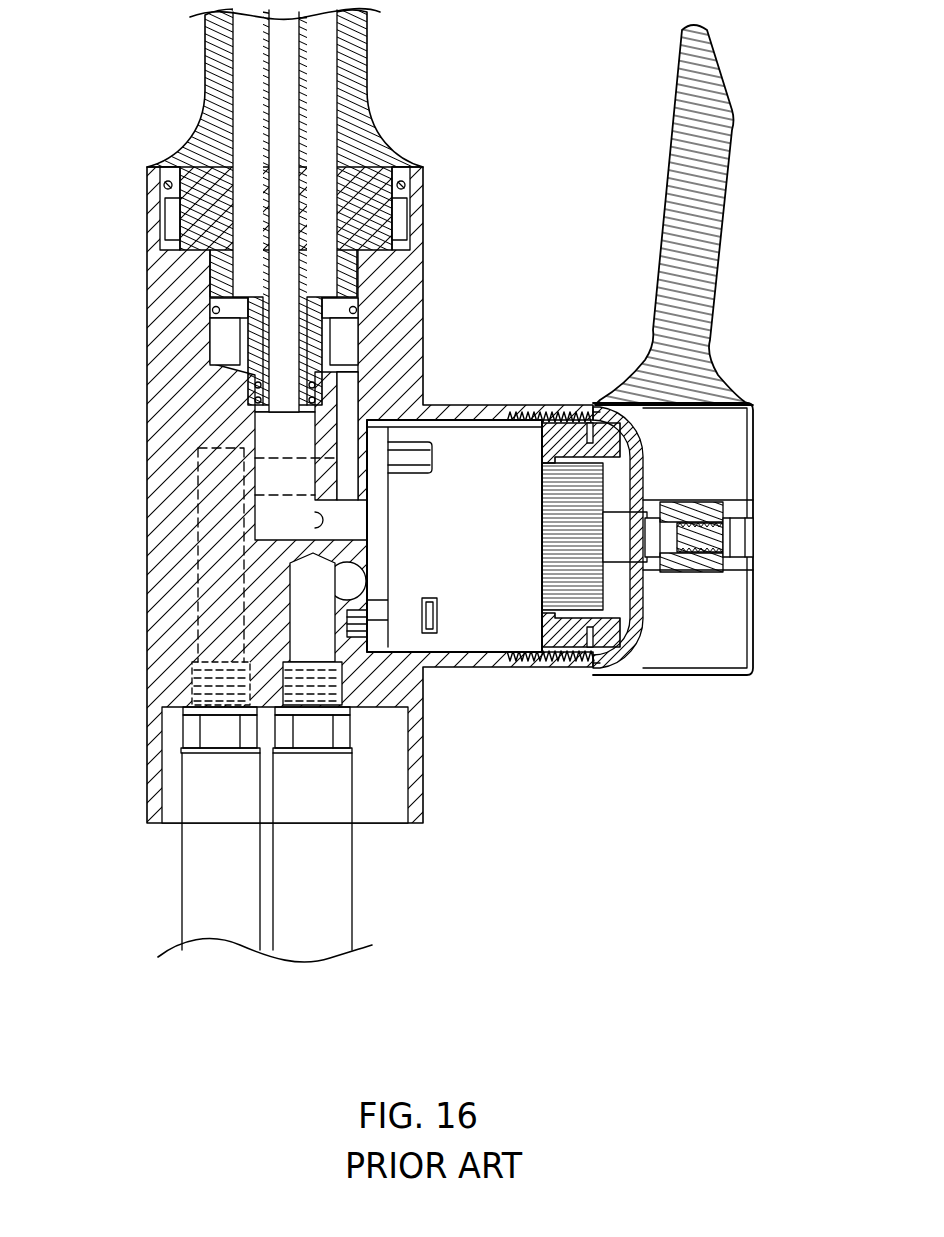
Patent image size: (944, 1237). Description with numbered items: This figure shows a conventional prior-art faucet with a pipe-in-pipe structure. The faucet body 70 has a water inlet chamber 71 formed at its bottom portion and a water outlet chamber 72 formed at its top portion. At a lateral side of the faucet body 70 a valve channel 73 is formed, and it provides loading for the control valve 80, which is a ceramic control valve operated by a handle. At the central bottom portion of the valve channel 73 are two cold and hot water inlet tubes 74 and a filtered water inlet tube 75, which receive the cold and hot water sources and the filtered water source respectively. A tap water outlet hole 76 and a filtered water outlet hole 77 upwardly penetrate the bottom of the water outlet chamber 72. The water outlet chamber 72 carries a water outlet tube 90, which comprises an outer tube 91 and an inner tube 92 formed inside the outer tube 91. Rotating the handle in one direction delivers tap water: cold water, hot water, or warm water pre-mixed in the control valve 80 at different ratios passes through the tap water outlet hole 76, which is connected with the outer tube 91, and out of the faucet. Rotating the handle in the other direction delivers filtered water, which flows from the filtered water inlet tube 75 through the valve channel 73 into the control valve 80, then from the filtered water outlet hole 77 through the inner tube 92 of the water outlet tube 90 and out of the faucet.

The faucet body 70 is at (432, 816).
The water inlet chamber 71 is at (173, 783).
The water outlet chamber 72 is at (213, 340).
The valve channel 73 is at (482, 420).
The cold and hot water inlet tubes 74 is at (205, 595).
The filtered water inlet tube 75 is at (325, 647).
The tap water outlet hole 76 is at (348, 380).
The filtered water outlet hole 77 is at (260, 440).
The control valve 80 is at (544, 644).
The water outlet tube 90 is at (273, 206).
The outer tube 91 is at (353, 55).
The inner tube 92 is at (295, 190).